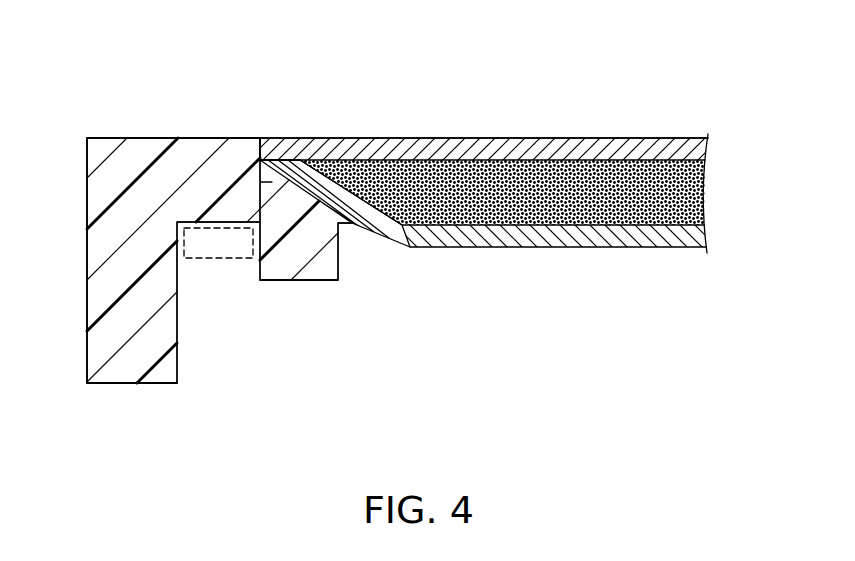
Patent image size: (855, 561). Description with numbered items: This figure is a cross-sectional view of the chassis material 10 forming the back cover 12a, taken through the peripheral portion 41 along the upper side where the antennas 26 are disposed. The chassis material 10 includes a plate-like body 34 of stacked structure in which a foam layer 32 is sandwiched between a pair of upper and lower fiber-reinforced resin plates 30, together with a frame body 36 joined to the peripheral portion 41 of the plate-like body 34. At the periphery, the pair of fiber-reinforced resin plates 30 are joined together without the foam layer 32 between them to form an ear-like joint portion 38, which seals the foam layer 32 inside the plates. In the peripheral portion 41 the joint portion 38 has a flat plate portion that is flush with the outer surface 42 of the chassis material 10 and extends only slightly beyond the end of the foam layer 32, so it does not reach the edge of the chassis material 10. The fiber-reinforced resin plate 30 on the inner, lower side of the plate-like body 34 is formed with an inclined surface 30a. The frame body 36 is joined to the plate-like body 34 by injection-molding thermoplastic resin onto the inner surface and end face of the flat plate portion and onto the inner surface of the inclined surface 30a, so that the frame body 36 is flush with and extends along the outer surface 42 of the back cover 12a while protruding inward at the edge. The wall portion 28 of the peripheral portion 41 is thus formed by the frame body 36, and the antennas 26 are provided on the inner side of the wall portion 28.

The chassis material 10 is at (61, 76).
The back cover 12a is at (173, 260).
The antennas 26 is at (213, 259).
The wall portion 28 is at (87, 345).
The fiber-reinforced resin plates 30 is at (709, 147).
The inclined surface 30a is at (380, 236).
The foam layer 32 is at (532, 192).
The plate-like body 34 is at (530, 211).
The frame body 36 is at (281, 284).
The joint portion 38 is at (268, 137).
The peripheral portion 41 is at (405, 393).
The outer surface 42 is at (448, 139).